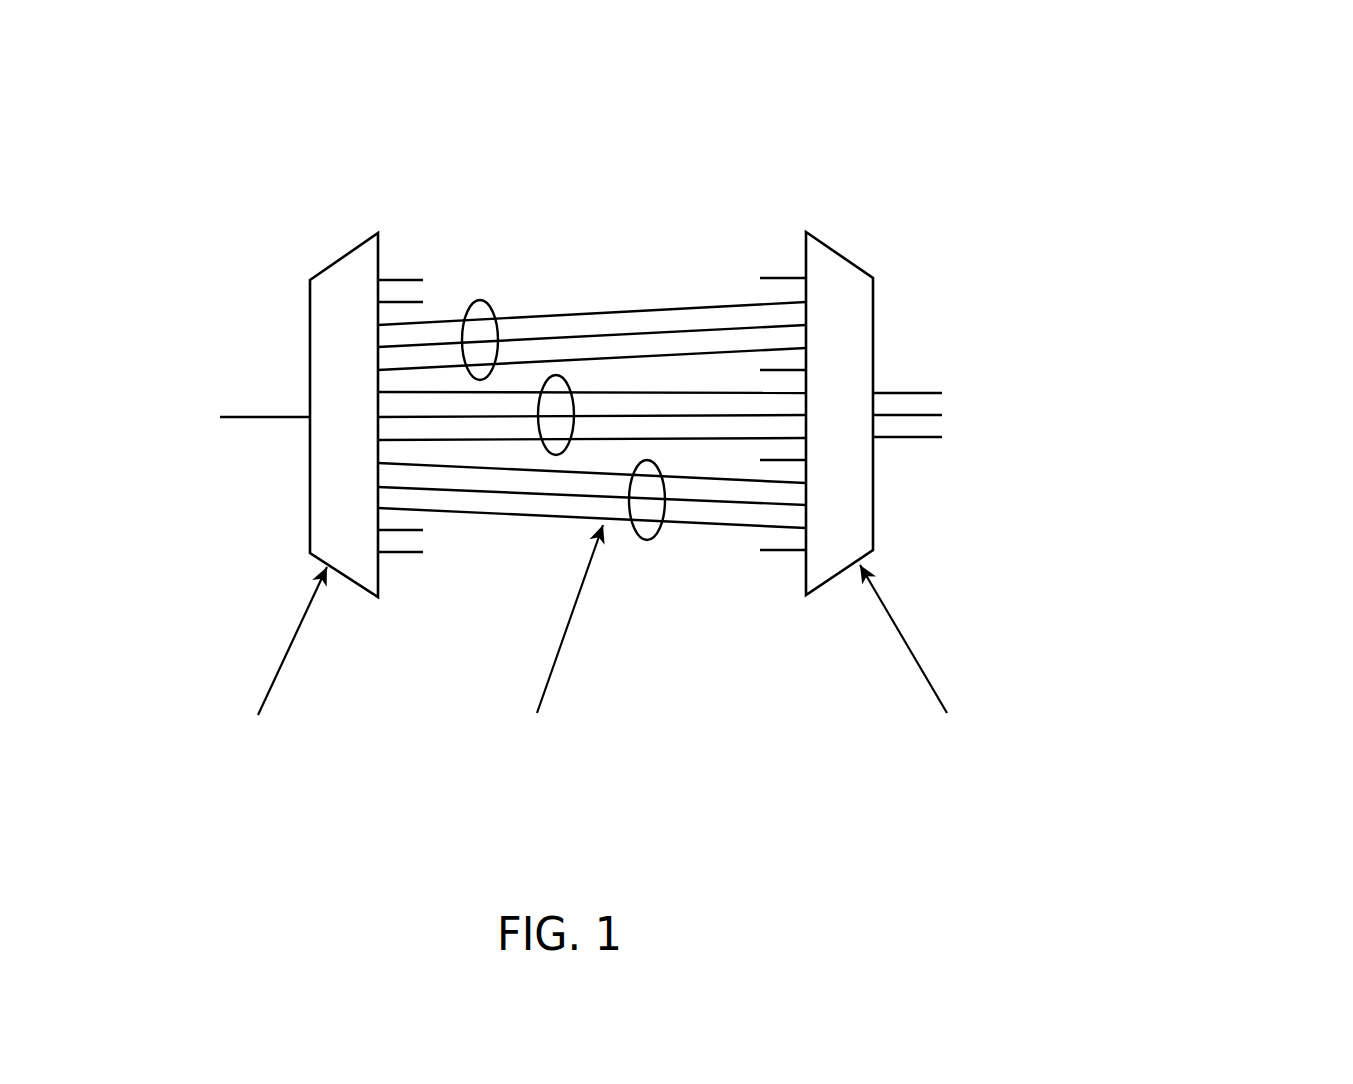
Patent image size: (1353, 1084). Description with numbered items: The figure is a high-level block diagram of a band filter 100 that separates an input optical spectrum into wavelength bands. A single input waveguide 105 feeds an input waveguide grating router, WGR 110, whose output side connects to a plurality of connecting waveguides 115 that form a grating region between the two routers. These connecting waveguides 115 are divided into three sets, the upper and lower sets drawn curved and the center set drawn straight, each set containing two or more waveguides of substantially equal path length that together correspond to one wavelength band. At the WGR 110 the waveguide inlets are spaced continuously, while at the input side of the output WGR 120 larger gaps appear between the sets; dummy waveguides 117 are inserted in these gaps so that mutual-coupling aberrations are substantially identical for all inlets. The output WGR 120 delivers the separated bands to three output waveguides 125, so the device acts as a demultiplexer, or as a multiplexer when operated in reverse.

The band filter 100 is at (1258, 849).
The input waveguide 105 is at (270, 417).
The input waveguide grating router (WGR) 110 is at (335, 262).
The connecting waveguides 115 is at (592, 409).
The dummy waveguides 117 is at (782, 278).
The output waveguide grating router (WGR) 120 is at (840, 252).
The output waveguides 125 is at (991, 416).